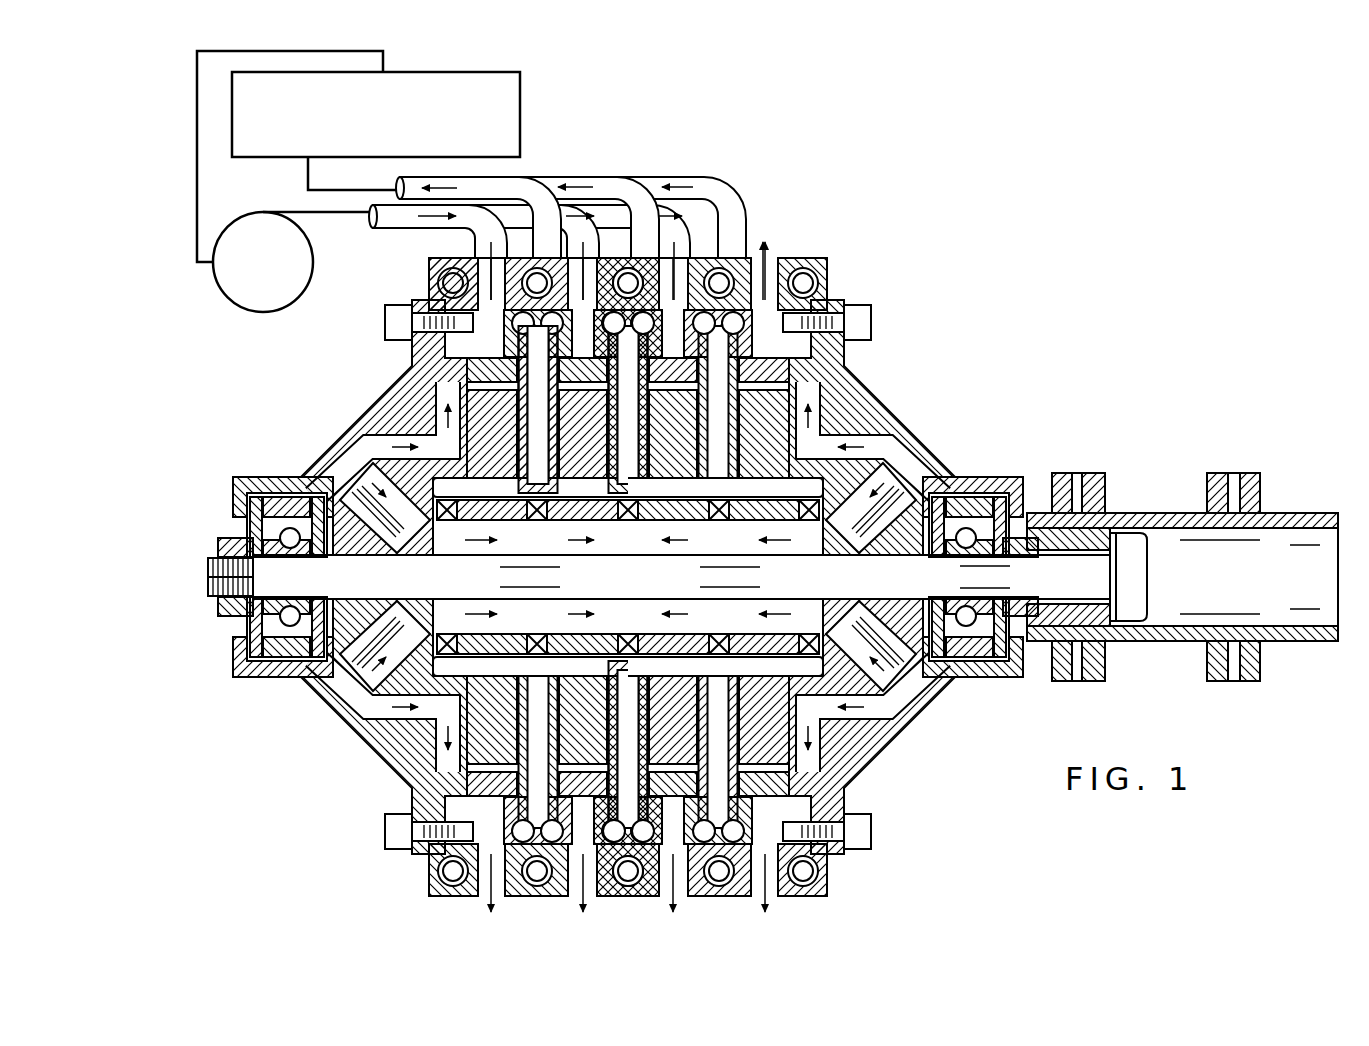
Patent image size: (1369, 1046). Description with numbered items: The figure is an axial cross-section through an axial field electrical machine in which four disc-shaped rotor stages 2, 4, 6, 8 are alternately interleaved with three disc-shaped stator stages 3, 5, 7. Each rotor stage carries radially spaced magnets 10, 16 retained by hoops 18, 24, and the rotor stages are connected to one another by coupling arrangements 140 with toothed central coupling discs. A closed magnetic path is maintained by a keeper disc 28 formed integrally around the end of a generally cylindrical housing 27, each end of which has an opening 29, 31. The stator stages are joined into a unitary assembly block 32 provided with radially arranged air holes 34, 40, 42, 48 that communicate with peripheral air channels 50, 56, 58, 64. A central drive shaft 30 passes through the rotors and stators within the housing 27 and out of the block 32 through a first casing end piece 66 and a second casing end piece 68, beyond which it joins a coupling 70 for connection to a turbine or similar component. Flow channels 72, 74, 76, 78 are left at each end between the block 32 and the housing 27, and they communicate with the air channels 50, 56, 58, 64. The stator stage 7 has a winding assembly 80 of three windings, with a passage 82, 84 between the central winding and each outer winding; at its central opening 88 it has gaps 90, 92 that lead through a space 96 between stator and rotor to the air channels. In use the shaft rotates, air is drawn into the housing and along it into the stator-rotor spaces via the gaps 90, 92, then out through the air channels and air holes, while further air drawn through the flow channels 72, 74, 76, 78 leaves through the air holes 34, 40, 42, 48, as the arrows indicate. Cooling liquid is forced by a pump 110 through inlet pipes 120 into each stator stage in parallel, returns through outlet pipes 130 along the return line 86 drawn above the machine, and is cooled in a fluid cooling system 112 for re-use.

The rotor stage 2 is at (412, 408).
The stator stage 3 is at (515, 852).
The rotor stage 4 is at (593, 527).
The stator stage 5 is at (606, 852).
The rotor stage 6 is at (660, 524).
The stator stage 7 is at (695, 852).
The rotor stage 8 is at (812, 382).
The magnet 10 is at (487, 462).
The magnet 16 is at (792, 520).
The hoop 18 is at (412, 372).
The hoop 24 is at (850, 360).
The housing 27 is at (865, 735).
The keeper disc 28 is at (815, 400).
The opening 29 is at (930, 458).
The drive shaft 30 is at (208, 580).
The opening 31 is at (860, 703).
The assembly block 32 is at (386, 778).
The air hole 34 is at (478, 262).
The air hole 40 is at (768, 272).
The air hole 42 is at (478, 898).
The air hole 48 is at (776, 898).
The air channel 50 is at (478, 284).
The air channel 56 is at (814, 263).
The air channel 58 is at (482, 852).
The air channel 64 is at (826, 862).
The first casing end piece 66 is at (235, 490).
The second casing end piece 68 is at (1020, 487).
The coupling 70 is at (1252, 490).
The flow channel 72 is at (333, 470).
The flow channel 74 is at (876, 445).
The flow channel 76 is at (380, 712).
The flow channel 78 is at (887, 725).
The winding assembly 80 is at (830, 284).
The passage 82 is at (692, 524).
The passage 84 is at (740, 518).
The return pipe 86 is at (655, 240).
The central opening 88 is at (612, 522).
The gap 90 is at (528, 524).
The gap 92 is at (557, 527).
The space 96 is at (440, 418).
The pump 110 is at (220, 280).
The fluid cooling system 112 is at (520, 113).
The inlet pipe 120 is at (375, 226).
The outlet pipe 130 is at (650, 335).
The coupling arrangement 140 is at (550, 527).